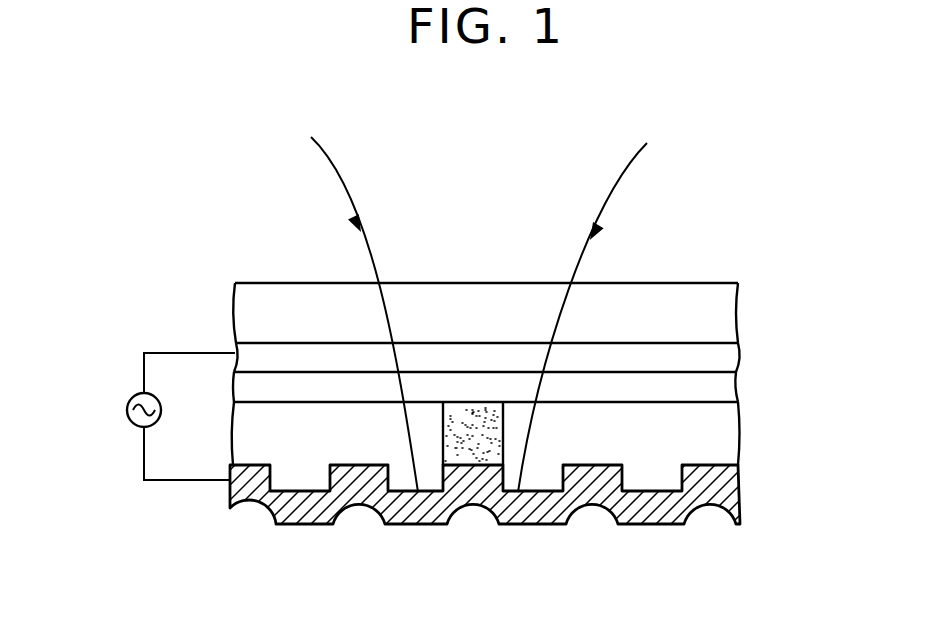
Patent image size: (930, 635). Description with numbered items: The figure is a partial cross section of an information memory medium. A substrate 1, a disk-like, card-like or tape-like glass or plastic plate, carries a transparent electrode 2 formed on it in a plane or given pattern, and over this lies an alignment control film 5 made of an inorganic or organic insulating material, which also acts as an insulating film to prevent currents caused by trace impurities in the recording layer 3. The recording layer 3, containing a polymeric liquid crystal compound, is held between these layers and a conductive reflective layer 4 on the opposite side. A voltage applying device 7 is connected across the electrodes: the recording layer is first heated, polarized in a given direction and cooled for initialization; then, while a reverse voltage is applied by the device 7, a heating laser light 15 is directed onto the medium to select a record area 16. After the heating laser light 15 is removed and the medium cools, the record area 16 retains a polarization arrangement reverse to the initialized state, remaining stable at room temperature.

The substrate 1 is at (722, 313).
The transparent electrode 2 is at (722, 358).
The alignment control film 5 is at (724, 388).
The recording layer 3 is at (717, 435).
The reflective layer 4 is at (720, 483).
The voltage applying device 7 is at (120, 414).
The heating laser light 15 is at (453, 264).
The record area 16 is at (478, 447).